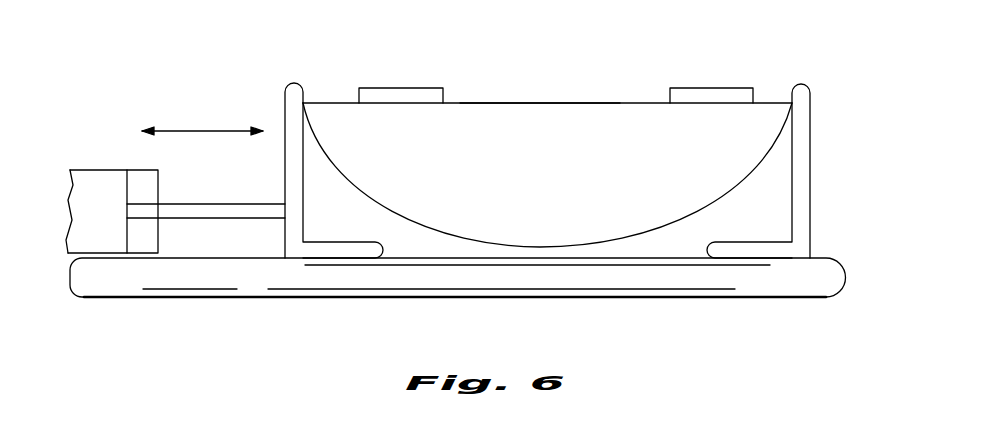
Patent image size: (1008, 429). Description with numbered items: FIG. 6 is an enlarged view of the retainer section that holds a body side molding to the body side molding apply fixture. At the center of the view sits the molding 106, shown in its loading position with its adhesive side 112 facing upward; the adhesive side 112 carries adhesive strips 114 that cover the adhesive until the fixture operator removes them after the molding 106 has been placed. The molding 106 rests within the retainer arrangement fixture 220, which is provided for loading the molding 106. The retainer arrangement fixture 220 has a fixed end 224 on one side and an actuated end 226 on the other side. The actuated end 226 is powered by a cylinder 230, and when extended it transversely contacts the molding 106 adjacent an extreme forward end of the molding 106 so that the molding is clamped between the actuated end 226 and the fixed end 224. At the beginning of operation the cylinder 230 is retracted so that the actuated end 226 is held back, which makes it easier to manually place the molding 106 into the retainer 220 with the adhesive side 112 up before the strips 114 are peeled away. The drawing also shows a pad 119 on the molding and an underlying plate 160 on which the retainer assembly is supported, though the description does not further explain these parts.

The body side molding 106 is at (590, 102).
The adhesive side 112 is at (540, 102).
The adhesive strips 114 is at (400, 88).
The contact pad 119 is at (715, 88).
The base plate 160 is at (845, 277).
The retainer arrangement fixture 220 is at (293, 78).
The fixed end 224 is at (810, 177).
The actuated end 226 is at (282, 232).
The cylinder 230 is at (103, 168).